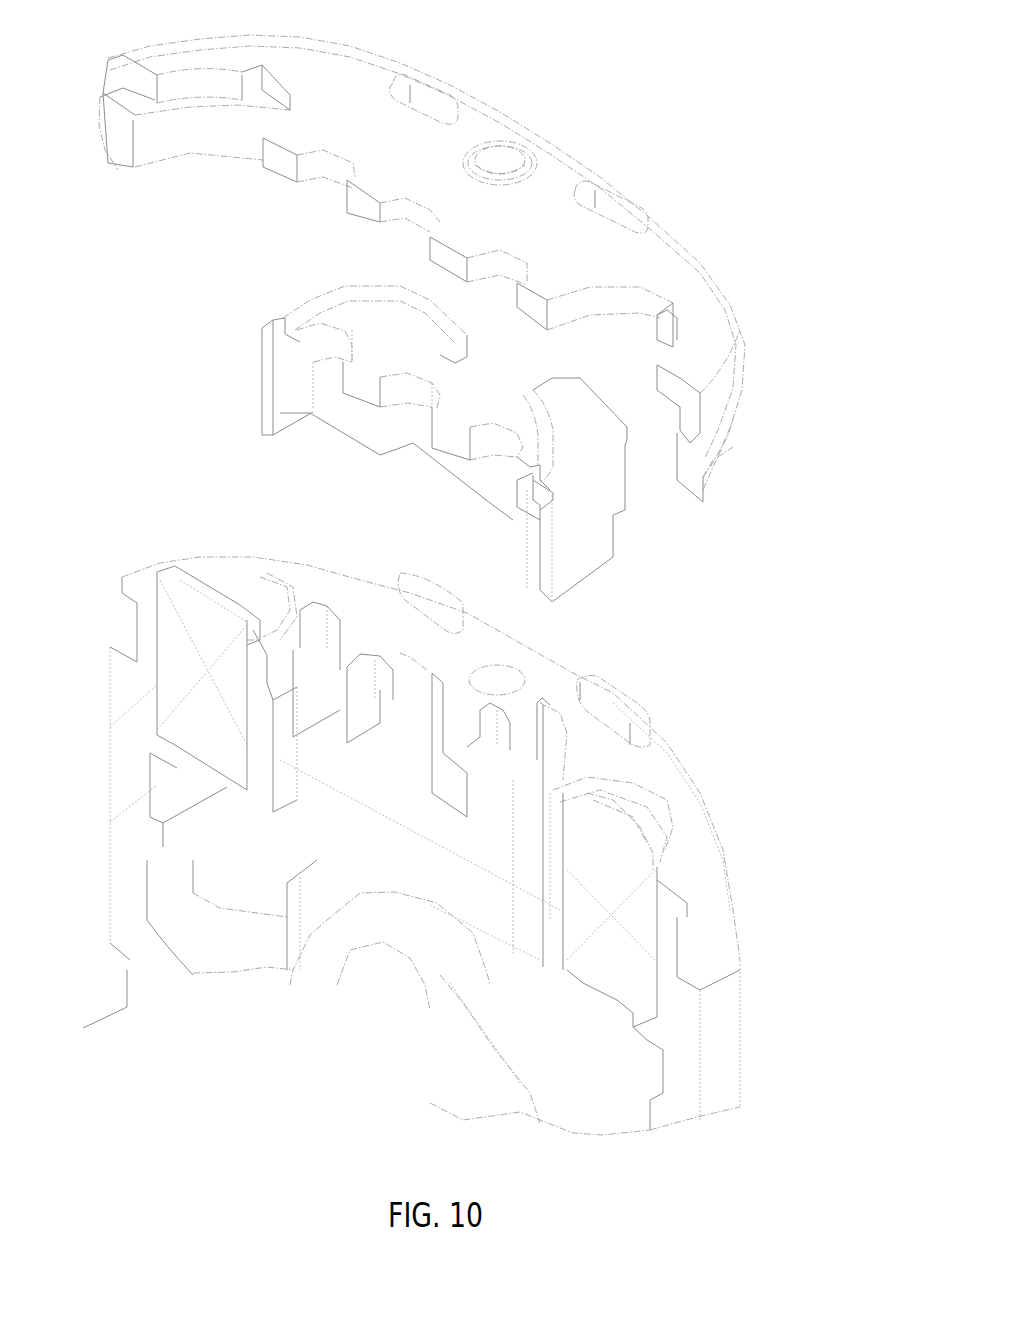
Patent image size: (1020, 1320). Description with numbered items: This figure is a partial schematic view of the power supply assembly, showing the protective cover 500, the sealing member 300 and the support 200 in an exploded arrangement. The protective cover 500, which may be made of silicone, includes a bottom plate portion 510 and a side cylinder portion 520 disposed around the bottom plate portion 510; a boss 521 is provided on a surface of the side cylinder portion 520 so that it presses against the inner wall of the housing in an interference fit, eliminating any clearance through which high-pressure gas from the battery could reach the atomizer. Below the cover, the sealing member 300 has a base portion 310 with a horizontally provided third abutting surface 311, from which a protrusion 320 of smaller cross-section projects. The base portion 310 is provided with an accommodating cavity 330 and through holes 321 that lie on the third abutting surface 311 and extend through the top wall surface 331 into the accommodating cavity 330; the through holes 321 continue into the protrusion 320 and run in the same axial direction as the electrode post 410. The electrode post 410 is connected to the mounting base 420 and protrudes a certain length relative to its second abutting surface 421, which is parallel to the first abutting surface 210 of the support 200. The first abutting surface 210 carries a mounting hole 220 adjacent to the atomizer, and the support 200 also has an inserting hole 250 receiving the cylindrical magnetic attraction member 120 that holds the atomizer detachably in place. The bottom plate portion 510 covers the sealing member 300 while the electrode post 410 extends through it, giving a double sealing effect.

The magnetic attraction member 120 is at (198, 578).
The support 200 is at (429, 822).
The first abutting surface 210 is at (270, 683).
The mounting hole 220 is at (543, 760).
The inserting hole 250 is at (157, 645).
The sealing member 300 is at (437, 448).
The base portion 310 is at (265, 427).
The third abutting surface 311 is at (597, 430).
The protrusion 320 is at (338, 315).
The through hole 321 is at (503, 442).
The accommodating cavity 330 is at (520, 553).
The top wall surface 331 is at (283, 360).
The electrode post 410 is at (323, 618).
The mounting base 420 is at (317, 810).
The second abutting surface 421 is at (287, 702).
The protective cover 500 is at (449, 254).
The bottom plate portion 510 is at (332, 73).
The side cylinder portion 520 is at (163, 132).
The boss 521 is at (740, 413).